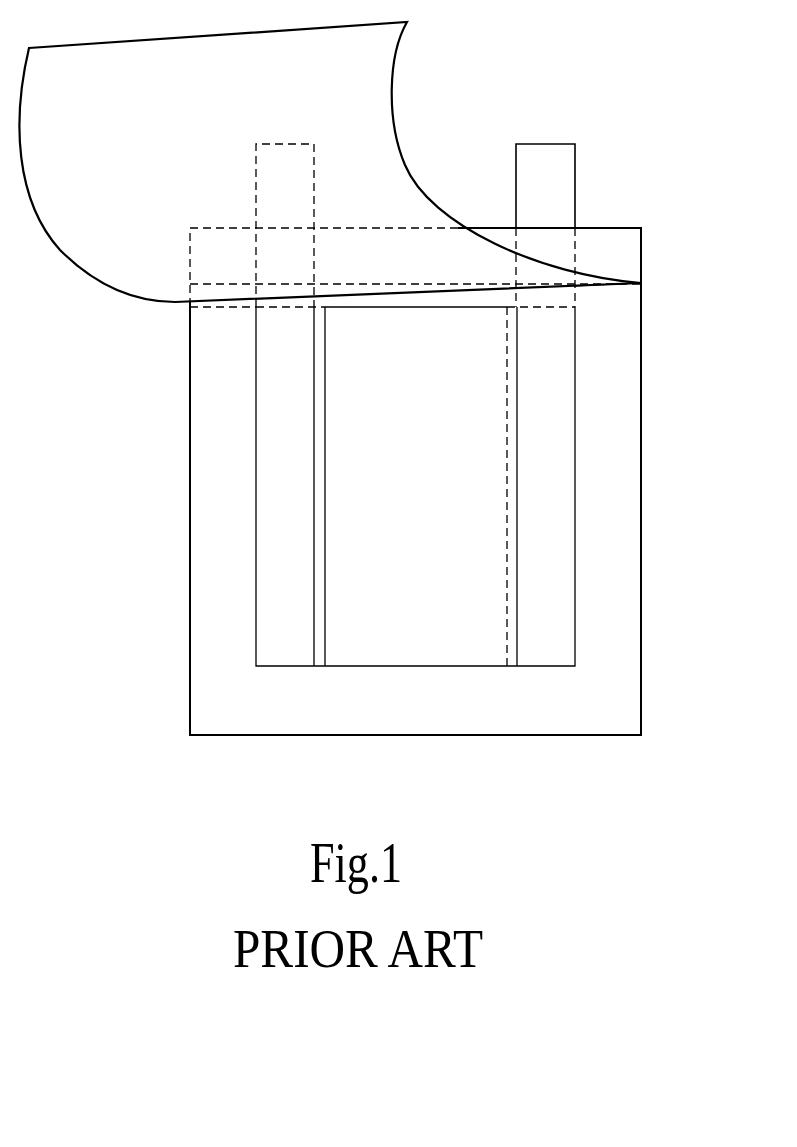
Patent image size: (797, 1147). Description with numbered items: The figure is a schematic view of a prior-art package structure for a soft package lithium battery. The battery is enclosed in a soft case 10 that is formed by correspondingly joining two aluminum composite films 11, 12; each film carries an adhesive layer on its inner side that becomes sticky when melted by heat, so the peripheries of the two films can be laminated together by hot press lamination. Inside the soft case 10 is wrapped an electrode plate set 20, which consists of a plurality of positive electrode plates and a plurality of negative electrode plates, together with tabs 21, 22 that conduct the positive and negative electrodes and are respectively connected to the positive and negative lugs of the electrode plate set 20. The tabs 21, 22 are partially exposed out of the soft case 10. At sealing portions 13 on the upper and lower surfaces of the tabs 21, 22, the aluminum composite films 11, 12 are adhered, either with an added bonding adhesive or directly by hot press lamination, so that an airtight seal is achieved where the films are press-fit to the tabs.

The soft case 10 is at (386, 444).
The aluminum composite film 11 is at (220, 452).
The aluminum composite film 12 is at (128, 265).
The sealing portion 13 is at (585, 294).
The electrode plate set 20 is at (413, 605).
The tab 21 is at (545, 163).
The tab 22 is at (289, 160).